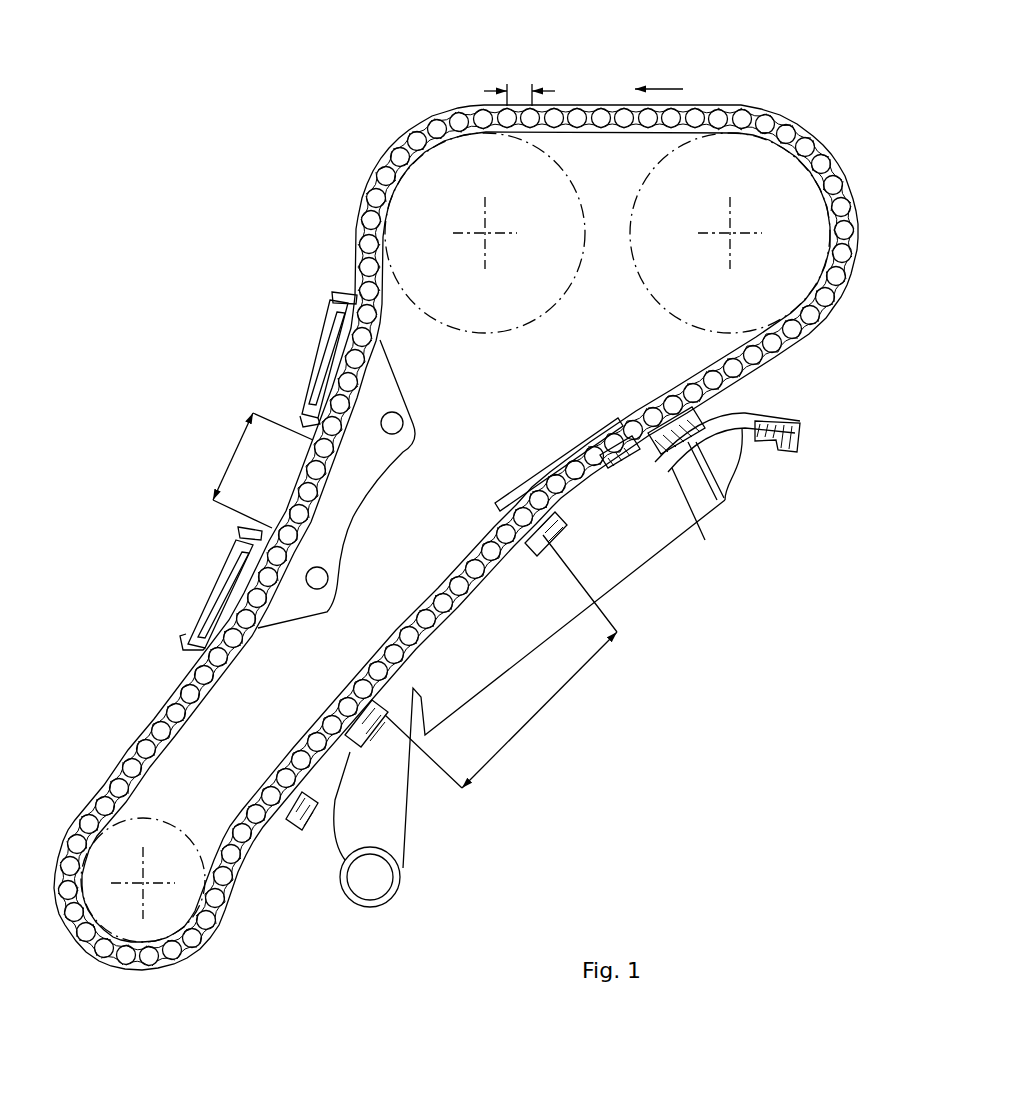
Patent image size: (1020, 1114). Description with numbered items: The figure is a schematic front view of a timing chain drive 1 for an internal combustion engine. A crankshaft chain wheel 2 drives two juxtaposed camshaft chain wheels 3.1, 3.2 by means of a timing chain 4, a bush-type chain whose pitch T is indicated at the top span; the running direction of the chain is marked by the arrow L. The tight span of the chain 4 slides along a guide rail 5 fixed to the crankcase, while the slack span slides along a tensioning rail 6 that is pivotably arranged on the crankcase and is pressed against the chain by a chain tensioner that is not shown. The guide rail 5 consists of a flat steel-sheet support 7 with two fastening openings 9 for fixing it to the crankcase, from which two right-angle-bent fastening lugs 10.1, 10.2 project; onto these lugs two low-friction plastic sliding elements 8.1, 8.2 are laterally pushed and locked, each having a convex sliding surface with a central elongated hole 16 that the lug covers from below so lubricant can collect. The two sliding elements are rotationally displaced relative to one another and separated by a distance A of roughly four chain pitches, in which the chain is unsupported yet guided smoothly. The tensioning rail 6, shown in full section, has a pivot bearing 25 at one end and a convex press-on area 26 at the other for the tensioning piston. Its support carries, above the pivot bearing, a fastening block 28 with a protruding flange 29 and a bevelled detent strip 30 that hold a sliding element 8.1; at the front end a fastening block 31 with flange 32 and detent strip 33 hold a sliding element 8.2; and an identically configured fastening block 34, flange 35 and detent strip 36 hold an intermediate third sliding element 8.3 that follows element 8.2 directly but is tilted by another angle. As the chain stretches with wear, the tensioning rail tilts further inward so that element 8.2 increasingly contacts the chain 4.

The timing chain drive 1 is at (318, 75).
The crankshaft chain wheel 2 is at (128, 912).
The camshaft chain wheel 3.1 is at (473, 167).
The camshaft chain wheel 3.2 is at (756, 185).
The timing chain 4 is at (617, 105).
The guide rail 5 is at (356, 509).
The tensioning rail 6 is at (533, 643).
The support 7 is at (384, 382).
The sliding element 8.1 is at (332, 297).
The sliding element 8.2 is at (243, 530).
The third sliding element 8.3 is at (652, 428).
The fastening opening 9 is at (404, 423).
The fastening lug 10.1 is at (327, 372).
The fastening lug 10.2 is at (212, 608).
The elongated hole 16 is at (555, 505).
The pivot bearing 25 is at (375, 878).
The press-on area 26 is at (733, 497).
The fastening block 28 is at (300, 760).
The flange 29 is at (312, 822).
The detent strip 30 is at (347, 725).
The fastening block 31 is at (735, 412).
The flange 32 is at (685, 478).
The detent strip 33 is at (835, 506).
The fastening block 34 is at (557, 466).
The flange 35 is at (557, 530).
The detent strip 36 is at (622, 428).
The chain pitch T is at (516, 88).
The projecting length L is at (659, 88).
The distance A is at (233, 457).